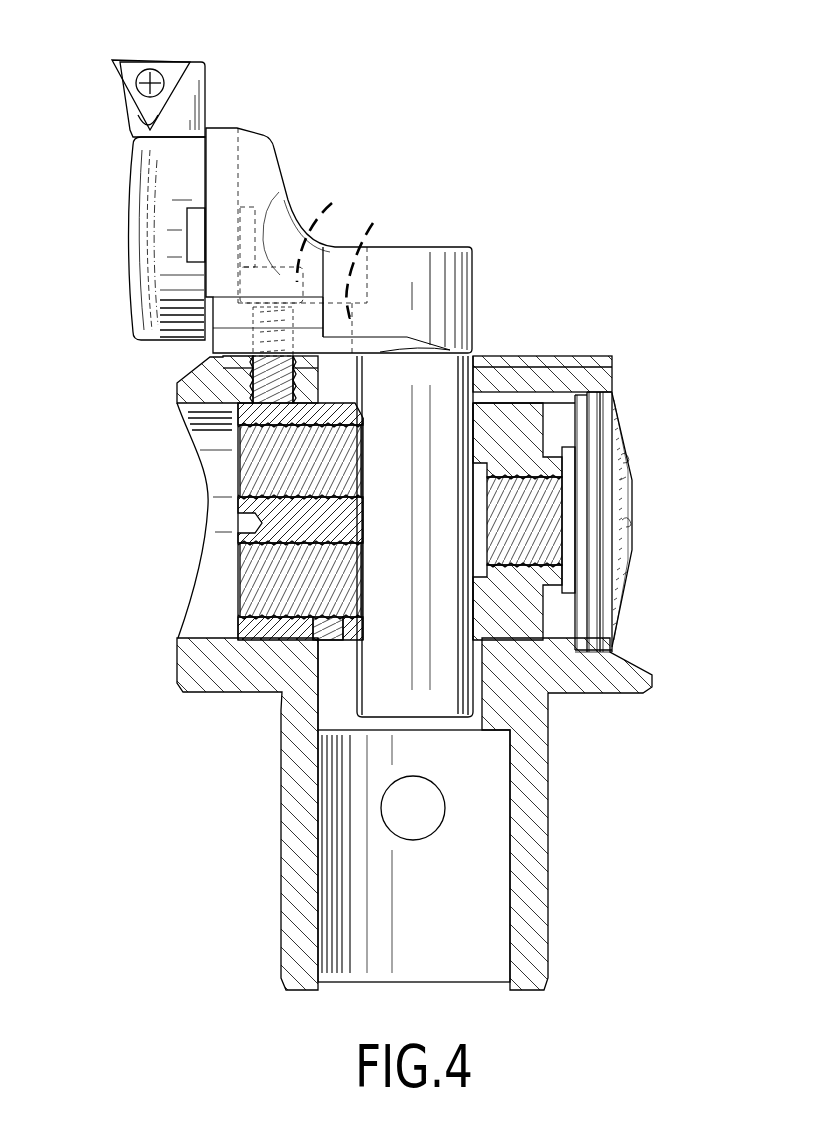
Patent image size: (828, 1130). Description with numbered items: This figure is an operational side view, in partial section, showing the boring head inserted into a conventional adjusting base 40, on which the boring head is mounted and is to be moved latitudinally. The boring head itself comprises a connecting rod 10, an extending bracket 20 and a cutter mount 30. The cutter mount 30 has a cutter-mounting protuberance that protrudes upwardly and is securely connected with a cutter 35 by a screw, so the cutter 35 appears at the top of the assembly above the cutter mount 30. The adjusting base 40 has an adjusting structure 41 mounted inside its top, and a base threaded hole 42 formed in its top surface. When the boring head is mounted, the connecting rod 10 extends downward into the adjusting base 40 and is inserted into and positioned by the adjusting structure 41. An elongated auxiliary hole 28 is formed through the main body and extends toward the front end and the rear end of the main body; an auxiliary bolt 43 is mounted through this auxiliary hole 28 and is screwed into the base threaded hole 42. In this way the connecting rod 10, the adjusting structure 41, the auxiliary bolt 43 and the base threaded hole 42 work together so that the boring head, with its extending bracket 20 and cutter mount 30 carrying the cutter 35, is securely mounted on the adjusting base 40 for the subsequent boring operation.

The connecting rod 10 is at (457, 718).
The extending bracket 20 is at (438, 237).
The auxiliary hole 28 is at (370, 254).
The cutter mount 30 is at (117, 218).
The cutter 35 is at (172, 70).
The adjusting base 40 is at (253, 827).
The adjusting structure 41 is at (632, 625).
The base threaded hole 42 is at (253, 383).
The auxiliary bolt 43 is at (323, 229).